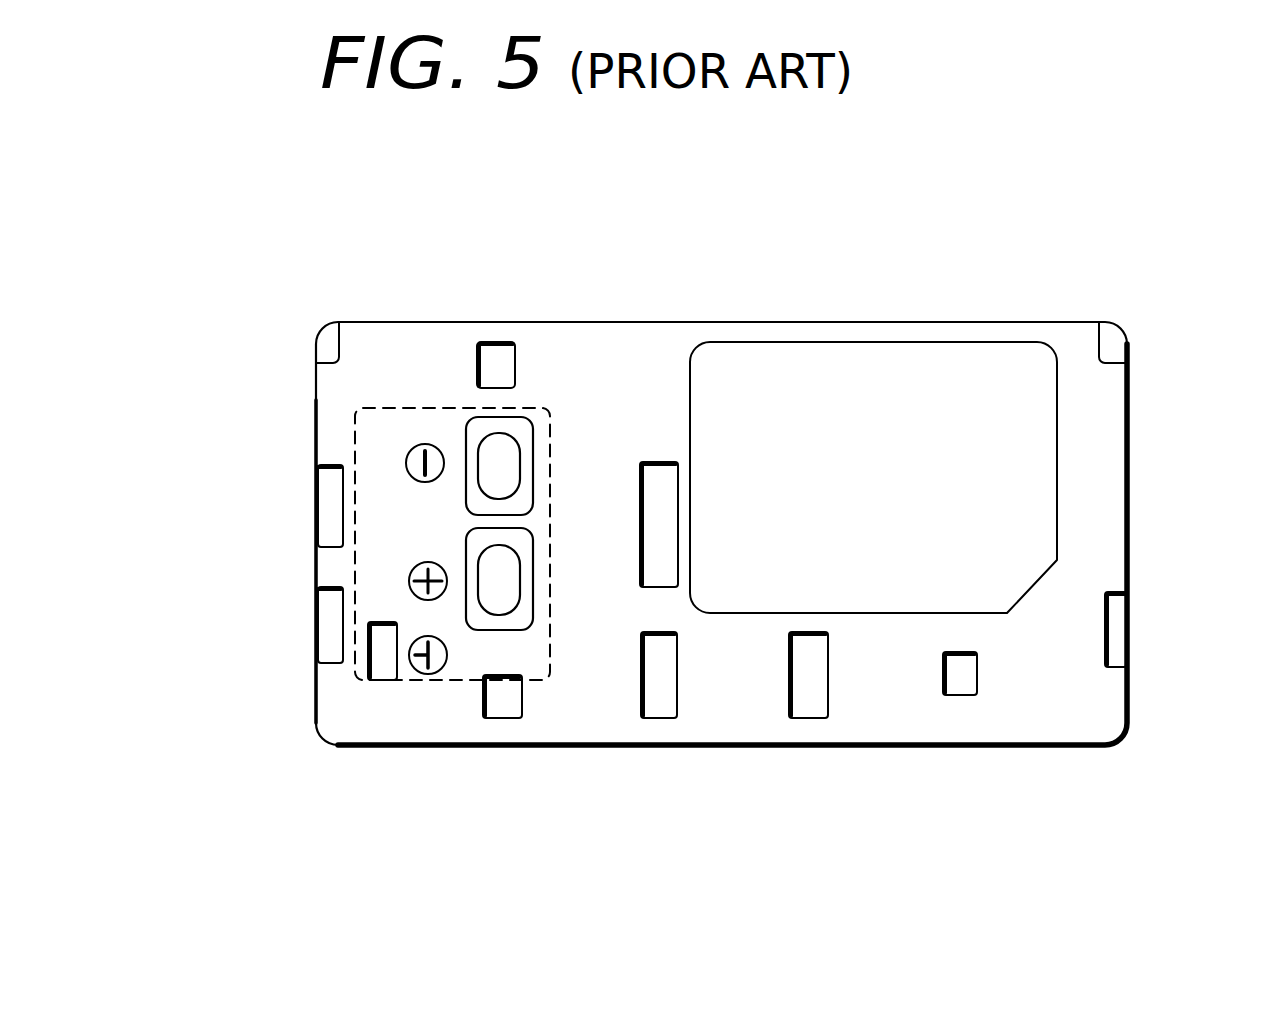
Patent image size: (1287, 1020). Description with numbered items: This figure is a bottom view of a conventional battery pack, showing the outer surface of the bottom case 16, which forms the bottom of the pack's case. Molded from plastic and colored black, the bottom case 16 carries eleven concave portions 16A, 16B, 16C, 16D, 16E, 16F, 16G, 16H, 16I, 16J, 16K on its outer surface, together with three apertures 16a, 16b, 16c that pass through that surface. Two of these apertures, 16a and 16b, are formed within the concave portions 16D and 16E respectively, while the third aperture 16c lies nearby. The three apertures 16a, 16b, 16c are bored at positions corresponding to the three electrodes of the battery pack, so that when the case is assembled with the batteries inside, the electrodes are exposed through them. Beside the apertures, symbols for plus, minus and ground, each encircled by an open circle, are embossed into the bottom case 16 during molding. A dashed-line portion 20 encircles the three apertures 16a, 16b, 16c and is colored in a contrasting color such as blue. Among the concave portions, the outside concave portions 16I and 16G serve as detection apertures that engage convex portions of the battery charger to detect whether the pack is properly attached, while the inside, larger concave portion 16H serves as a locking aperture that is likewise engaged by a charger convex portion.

The bottom case 16 is at (1130, 510).
The dashed-line portion 20 is at (402, 405).
The concave portion 16A is at (323, 637).
The concave portion 16B is at (323, 508).
The concave portion 16C is at (505, 707).
The concave portion 16D is at (522, 543).
The concave portion 16E is at (513, 430).
The concave portion 16F is at (495, 355).
The detection aperture (concave portion) 16G is at (665, 692).
The locking aperture (concave portion) 16H is at (663, 493).
The detection aperture (concave portion) 16I is at (820, 693).
The concave portion 16J is at (960, 683).
The concave portion 16K is at (1120, 626).
The aperture 16a is at (509, 577).
The aperture 16b is at (508, 465).
The aperture 16c is at (380, 665).